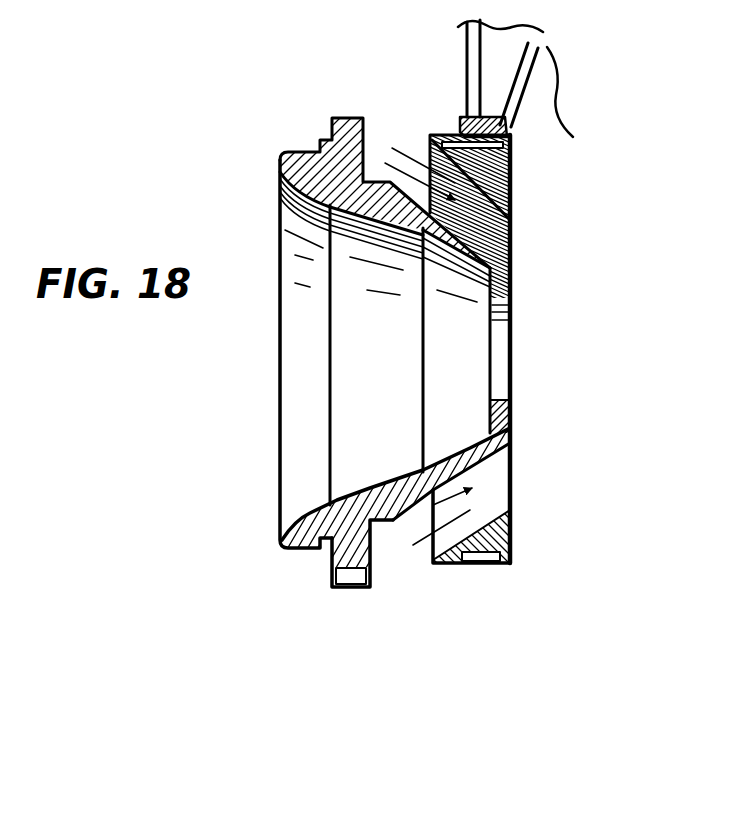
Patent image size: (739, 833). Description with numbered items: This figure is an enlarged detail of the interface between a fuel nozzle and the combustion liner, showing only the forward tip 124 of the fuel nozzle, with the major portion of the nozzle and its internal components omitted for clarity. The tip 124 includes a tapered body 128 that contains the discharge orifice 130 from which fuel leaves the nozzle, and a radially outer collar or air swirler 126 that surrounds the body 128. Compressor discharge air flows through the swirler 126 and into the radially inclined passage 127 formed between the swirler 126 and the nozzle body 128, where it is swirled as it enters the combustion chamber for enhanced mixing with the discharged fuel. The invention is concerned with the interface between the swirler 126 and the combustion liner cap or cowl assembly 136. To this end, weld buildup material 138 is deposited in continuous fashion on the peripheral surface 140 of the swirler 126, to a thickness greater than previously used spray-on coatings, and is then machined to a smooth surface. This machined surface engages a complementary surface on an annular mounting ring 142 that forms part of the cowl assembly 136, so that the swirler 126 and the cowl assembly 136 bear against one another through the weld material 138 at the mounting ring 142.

The forward tip 124 is at (310, 556).
The radially outer collar 126 is at (513, 437).
The radially inclined passage 127 is at (515, 220).
The tapered body 128 is at (403, 518).
The discharge orifice 130 is at (500, 372).
The combustion liner cap or cowl assembly 136 is at (458, 53).
The weld buildup material 138 is at (507, 148).
The peripheral surface 140 is at (452, 563).
The annular mounting ring 142 is at (457, 122).